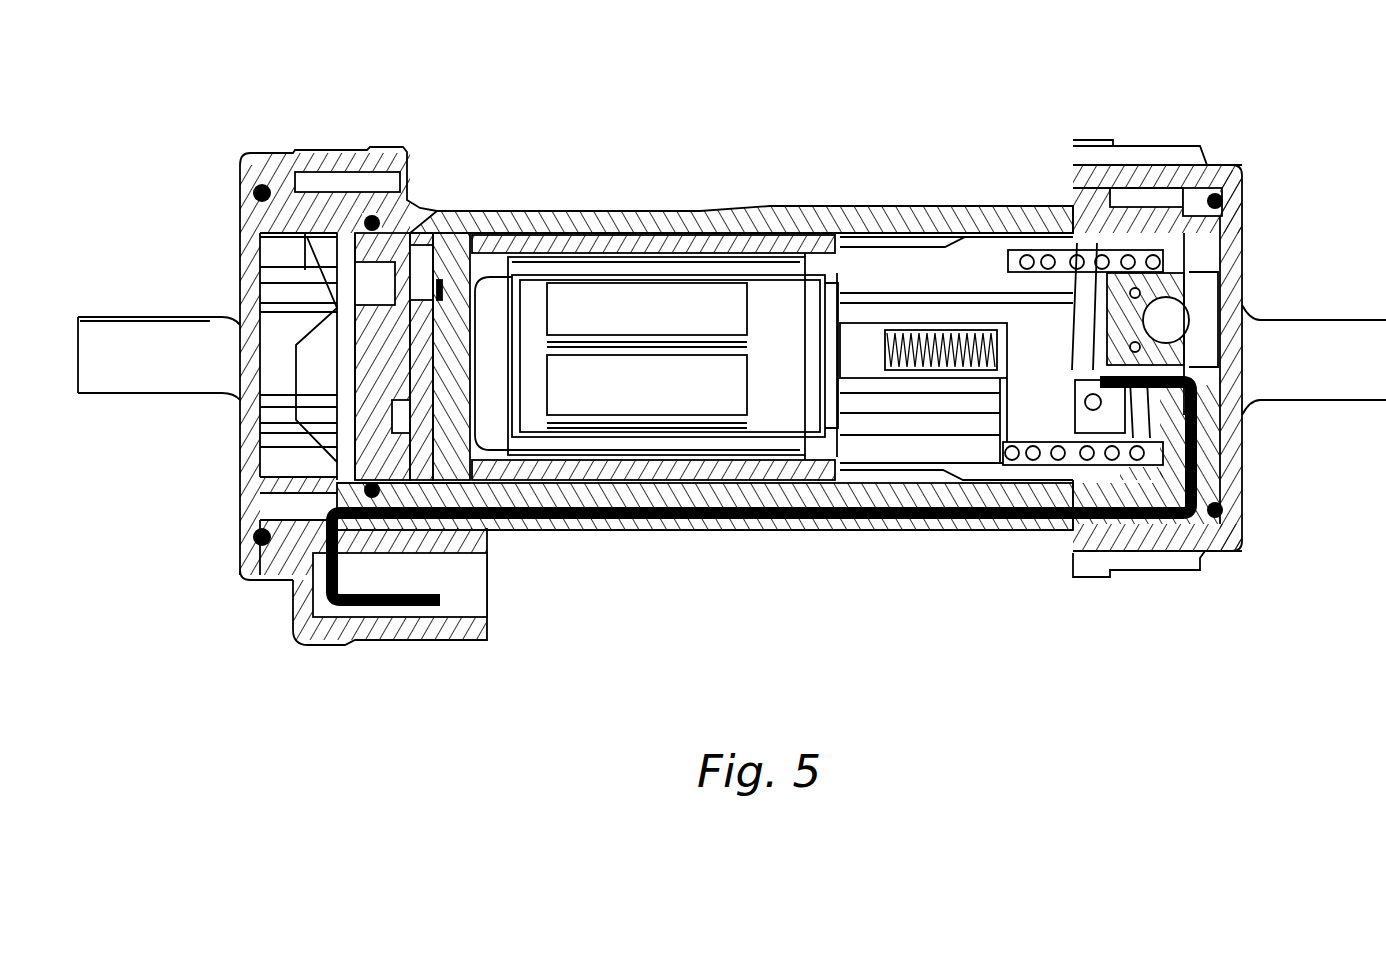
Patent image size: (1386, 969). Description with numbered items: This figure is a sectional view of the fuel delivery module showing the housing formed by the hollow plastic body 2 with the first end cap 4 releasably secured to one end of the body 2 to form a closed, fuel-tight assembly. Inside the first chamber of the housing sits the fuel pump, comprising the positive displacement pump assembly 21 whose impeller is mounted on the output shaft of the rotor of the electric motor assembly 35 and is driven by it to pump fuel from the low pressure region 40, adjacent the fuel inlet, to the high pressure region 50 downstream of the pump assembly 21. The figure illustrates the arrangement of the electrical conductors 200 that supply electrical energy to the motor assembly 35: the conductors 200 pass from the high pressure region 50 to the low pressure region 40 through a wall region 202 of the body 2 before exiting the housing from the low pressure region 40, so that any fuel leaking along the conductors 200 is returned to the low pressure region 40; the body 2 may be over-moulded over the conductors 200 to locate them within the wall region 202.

The hollow body 2 is at (761, 208).
The first end cap 4 is at (248, 153).
The positive displacement pump assembly 21 is at (472, 145).
The electric motor assembly 35 is at (807, 477).
The low pressure region 40 is at (336, 308).
The high pressure region 50 is at (1084, 243).
The electrical conductors 200 is at (653, 517).
The wall region 202 is at (860, 530).